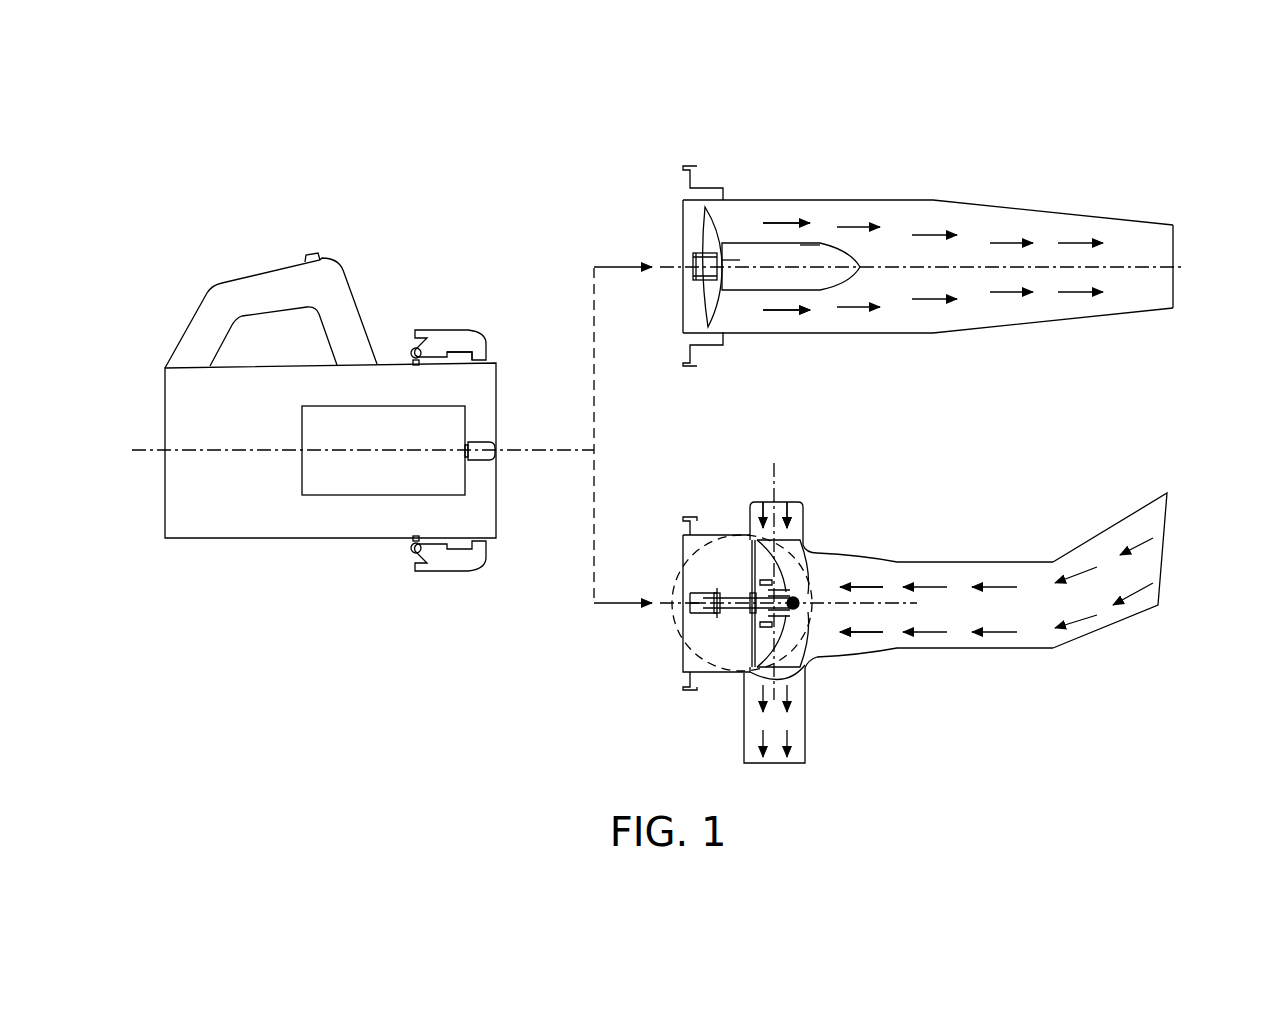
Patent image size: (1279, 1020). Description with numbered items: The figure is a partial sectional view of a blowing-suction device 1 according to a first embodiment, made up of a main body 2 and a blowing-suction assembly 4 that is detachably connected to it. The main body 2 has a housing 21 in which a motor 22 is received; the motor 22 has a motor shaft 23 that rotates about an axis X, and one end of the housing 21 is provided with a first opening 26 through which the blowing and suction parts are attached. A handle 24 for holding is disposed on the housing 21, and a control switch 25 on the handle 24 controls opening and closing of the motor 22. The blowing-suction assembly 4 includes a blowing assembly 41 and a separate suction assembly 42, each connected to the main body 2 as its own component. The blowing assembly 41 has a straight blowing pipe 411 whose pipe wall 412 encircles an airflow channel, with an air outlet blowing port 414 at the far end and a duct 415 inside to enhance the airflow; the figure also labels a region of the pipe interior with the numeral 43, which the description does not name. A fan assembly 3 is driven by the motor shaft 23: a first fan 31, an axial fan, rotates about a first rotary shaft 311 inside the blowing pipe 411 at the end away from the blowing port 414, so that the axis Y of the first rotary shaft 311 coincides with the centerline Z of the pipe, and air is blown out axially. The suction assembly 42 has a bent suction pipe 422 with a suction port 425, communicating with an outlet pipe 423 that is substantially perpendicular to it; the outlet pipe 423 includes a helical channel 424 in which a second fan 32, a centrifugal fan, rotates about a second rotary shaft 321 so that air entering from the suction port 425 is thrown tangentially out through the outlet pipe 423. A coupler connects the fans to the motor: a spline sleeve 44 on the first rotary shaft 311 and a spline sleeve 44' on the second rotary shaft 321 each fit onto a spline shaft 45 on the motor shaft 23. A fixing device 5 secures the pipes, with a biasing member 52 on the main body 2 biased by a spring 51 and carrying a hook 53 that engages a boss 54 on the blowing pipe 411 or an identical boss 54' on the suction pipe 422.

The blowing-suction device 1 is at (88, 110).
The main body 2 is at (152, 337).
The housing 21 is at (228, 366).
The motor 22 is at (347, 486).
The motor shaft 23 is at (469, 441).
The handle 24 is at (267, 290).
The control switch 25 is at (320, 254).
The first opening 26 is at (497, 493).
The spline shaft 45 is at (492, 460).
The fixing device 5 is at (527, 266).
The spring 51 is at (410, 350).
The biasing member 52 is at (443, 330).
The hook 53 is at (467, 330).
The boss 54 is at (703, 246).
The boss 54' is at (664, 627).
The fan assembly 3 is at (718, 312).
The first fan 31 is at (715, 243).
The first rotary shaft 311 is at (722, 247).
The second fan 32 is at (797, 553).
The second rotary shaft 321 is at (742, 612).
The air passage 43 is at (748, 278).
The spline sleeve 44 is at (674, 328).
The spline sleeve 44' is at (676, 644).
The blowing-suction assembly 4 is at (1102, 330).
The blowing assembly 41 is at (956, 232).
The blowing pipe 411 is at (1028, 208).
The pipe wall 412 is at (888, 200).
The air outlet blowing port 414 is at (1173, 283).
The duct 415 is at (823, 245).
The suction assembly 42 is at (948, 615).
The suction pipe 422 is at (1020, 562).
The outlet pipe 423 is at (745, 752).
The helical channel 424 is at (785, 502).
The suction port 425 is at (1166, 538).